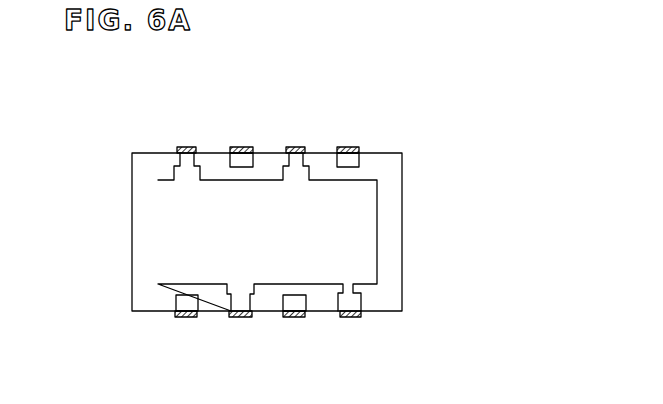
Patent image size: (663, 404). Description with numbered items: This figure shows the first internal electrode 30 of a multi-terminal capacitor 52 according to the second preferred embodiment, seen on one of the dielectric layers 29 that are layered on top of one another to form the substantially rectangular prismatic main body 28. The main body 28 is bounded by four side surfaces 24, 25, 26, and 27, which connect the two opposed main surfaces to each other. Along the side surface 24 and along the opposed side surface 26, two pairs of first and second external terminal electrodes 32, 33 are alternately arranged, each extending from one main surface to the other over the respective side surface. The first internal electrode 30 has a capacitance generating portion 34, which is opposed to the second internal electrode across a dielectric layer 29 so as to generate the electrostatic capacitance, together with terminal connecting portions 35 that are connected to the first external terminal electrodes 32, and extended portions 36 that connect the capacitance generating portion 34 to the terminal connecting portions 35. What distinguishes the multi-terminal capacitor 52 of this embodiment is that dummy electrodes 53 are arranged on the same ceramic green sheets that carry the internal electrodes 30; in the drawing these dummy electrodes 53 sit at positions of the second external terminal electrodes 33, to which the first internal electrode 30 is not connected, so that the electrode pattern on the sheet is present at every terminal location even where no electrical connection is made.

The multi-terminal capacitor 52 is at (71, 90).
The side surface 24 is at (328, 150).
The side surface 25 is at (131, 257).
The side surface 26 is at (273, 317).
The side surface 27 is at (402, 265).
The main body 28 is at (411, 155).
The dielectric layer 29 is at (396, 220).
The first internal electrode 30 is at (148, 230).
The first external terminal electrode 32 is at (187, 147).
The second external terminal electrode 33 is at (242, 147).
The capacitance generating portion 34 is at (185, 204).
The terminal connecting portion 35 is at (185, 161).
The extended portion 36 is at (355, 291).
The dummy electrode 53 is at (244, 162).